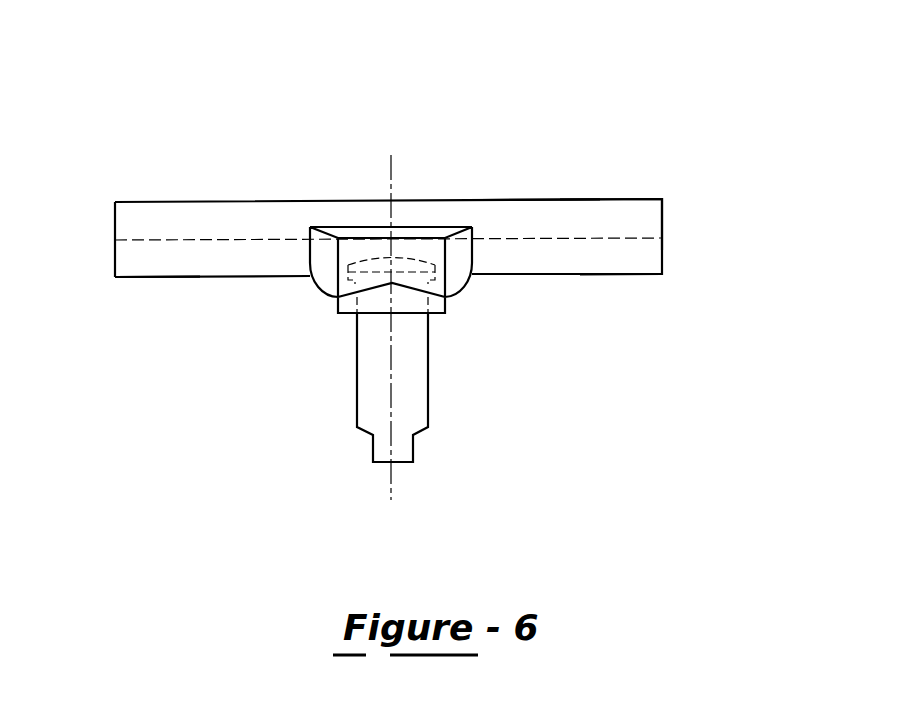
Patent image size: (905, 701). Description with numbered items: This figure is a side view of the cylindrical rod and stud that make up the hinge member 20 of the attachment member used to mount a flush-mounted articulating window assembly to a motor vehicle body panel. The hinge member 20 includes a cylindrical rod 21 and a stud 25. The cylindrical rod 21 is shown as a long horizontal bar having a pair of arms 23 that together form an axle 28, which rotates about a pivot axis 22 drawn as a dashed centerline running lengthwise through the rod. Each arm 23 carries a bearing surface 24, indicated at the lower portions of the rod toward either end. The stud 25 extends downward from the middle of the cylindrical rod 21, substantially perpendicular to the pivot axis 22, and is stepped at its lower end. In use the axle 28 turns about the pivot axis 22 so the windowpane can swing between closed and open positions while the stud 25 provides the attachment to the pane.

The hinge member 20 is at (438, 266).
The cylindrical rod 21 is at (662, 199).
The pivot axis 22 is at (662, 237).
The arms 23 is at (127, 222).
The bearing surface 24 is at (178, 268).
The stud 25 is at (367, 428).
The axle 28 is at (568, 200).